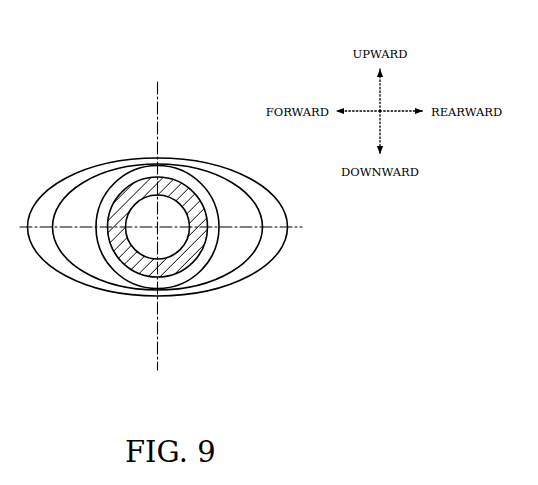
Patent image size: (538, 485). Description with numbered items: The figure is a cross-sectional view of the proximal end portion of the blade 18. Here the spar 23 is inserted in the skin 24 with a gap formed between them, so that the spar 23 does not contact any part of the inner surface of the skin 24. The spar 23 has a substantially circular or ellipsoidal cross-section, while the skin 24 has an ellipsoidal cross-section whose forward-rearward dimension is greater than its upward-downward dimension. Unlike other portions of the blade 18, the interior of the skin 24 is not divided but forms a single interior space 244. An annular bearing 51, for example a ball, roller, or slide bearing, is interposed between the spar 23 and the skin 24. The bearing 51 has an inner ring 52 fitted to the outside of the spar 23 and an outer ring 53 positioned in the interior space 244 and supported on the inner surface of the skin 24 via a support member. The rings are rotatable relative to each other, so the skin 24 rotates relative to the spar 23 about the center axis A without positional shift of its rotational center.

The blade 18 is at (109, 77).
The spar 23 is at (112, 242).
The skin 24 is at (90, 167).
The interior space 244 is at (77, 199).
The bearing 51 is at (233, 95).
The inner ring 52 is at (203, 217).
The outer ring 53 is at (192, 173).
The center axis A is at (158, 230).